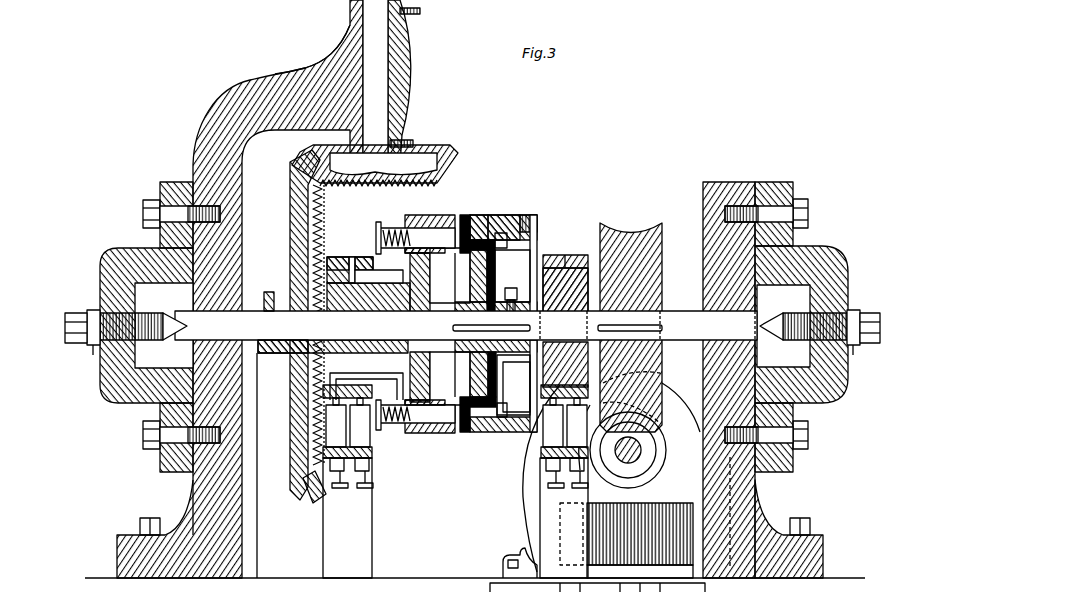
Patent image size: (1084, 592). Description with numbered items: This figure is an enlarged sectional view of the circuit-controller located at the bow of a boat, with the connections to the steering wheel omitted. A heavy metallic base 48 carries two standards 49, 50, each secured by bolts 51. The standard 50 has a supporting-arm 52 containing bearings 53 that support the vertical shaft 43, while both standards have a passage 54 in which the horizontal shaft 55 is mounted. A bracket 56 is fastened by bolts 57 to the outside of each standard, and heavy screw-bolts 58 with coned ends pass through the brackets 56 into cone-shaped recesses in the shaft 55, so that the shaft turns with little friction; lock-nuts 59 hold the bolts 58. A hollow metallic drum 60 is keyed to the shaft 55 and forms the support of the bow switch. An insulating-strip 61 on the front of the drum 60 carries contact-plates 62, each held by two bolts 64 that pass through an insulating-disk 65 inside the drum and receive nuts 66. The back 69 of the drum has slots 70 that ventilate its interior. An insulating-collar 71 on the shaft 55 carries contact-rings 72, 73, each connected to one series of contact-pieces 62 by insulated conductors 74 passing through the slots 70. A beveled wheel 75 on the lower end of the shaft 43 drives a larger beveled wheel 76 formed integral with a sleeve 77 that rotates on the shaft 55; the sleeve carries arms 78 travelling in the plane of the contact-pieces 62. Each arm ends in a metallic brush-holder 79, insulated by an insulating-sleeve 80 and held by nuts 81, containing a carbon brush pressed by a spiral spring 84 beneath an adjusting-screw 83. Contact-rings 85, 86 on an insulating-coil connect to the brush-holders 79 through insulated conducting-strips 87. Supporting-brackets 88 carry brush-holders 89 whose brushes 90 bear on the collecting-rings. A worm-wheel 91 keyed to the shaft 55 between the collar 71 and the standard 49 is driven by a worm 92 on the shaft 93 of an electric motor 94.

The shaft 43 is at (378, 32).
The heavy metallic base 48 is at (410, 578).
The standard 49 is at (735, 186).
The standard 50 is at (240, 289).
The bolts 51 is at (142, 520).
The supporting-arm 52 is at (302, 70).
The bearings 53 is at (405, 70).
The passage 54 is at (252, 298).
The horizontal shaft 55 is at (466, 325).
The bracket 56 is at (125, 256).
The bolts 57 is at (145, 210).
The screw-bolts 58 is at (148, 320).
The lock-nuts 59 is at (93, 346).
The hollow metallic drum 60 is at (490, 218).
The insulating-strip 61 is at (466, 216).
The contact-plates 62 is at (463, 220).
The bolts 64 is at (492, 216).
The insulating-disk 65 is at (497, 272).
The nuts 66 is at (528, 222).
The back of the drum 69 is at (538, 240).
The slots 70 is at (512, 276).
The insulating-collar 71 is at (565, 290).
The contact-ring 72 is at (557, 258).
The contact-ring 73 is at (640, 385).
The insulated conductors 74 is at (513, 384).
The beveled wheel 75 is at (448, 160).
The larger beveled wheel 76 is at (300, 212).
The sleeve 77 is at (334, 325).
The arms 78 is at (440, 326).
The brush-holder 79 is at (438, 240).
The insulating-sleeve 80 is at (412, 230).
The nuts 81 is at (407, 222).
The adjusting-screw 83 is at (382, 240).
The spiral spring 84 is at (378, 236).
The contact-ring 85 is at (362, 255).
The contact-ring 86 is at (338, 255).
The insulated conducting-strips 87 is at (382, 376).
The supporting-brackets 88 is at (455, 512).
The brush-holders 89 is at (338, 425).
The brushes 90 is at (333, 413).
The worm-wheel 91 is at (660, 275).
The worm 92 is at (640, 460).
The motor shaft 93 is at (640, 540).
The electric motor 94 is at (611, 477).